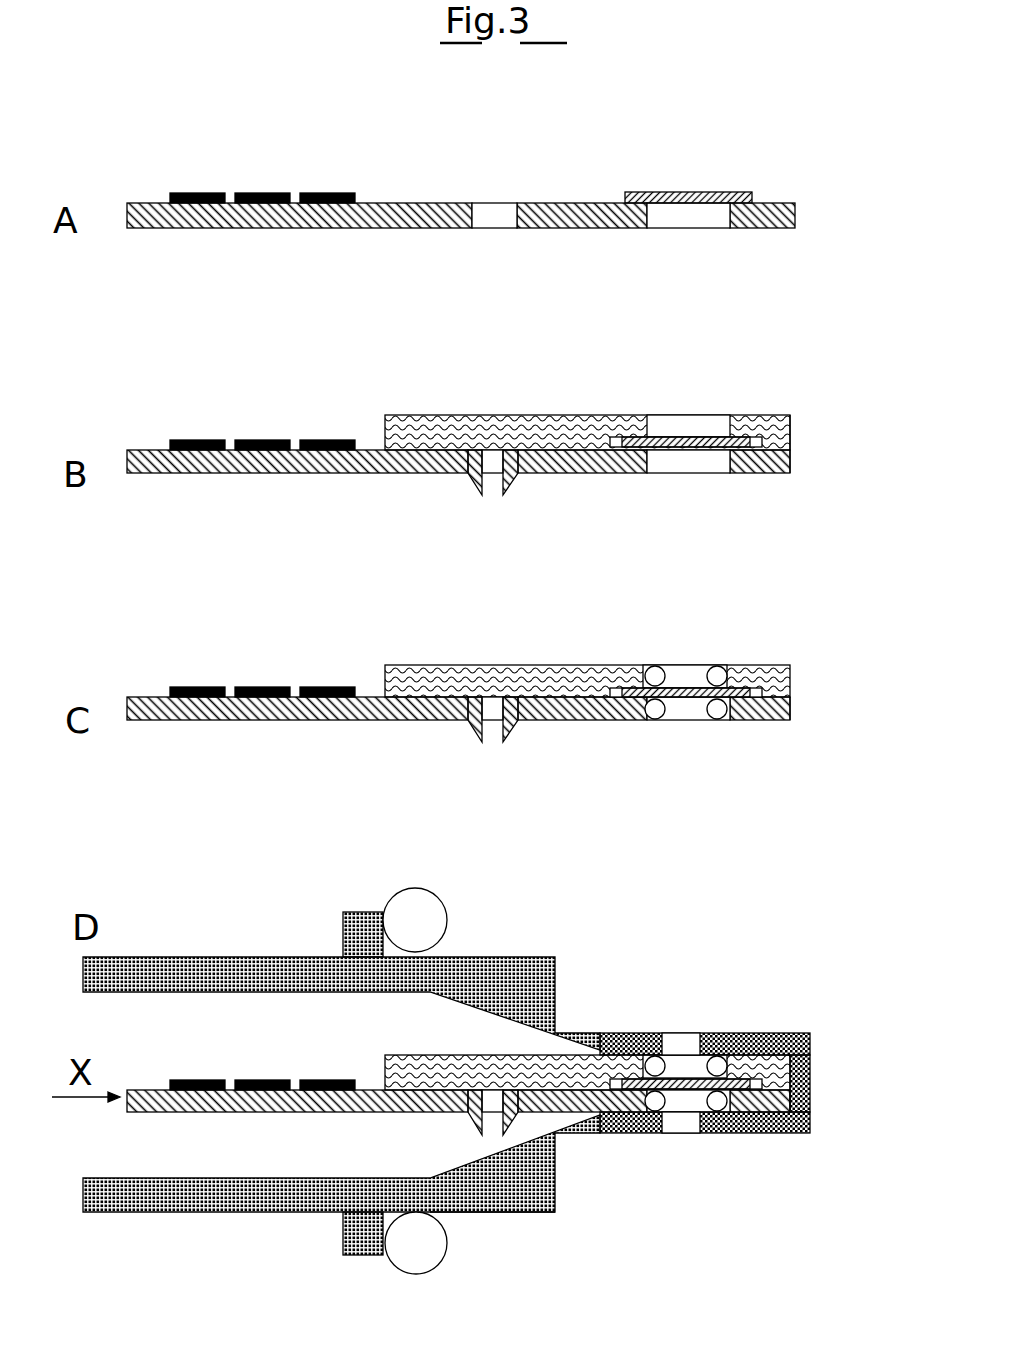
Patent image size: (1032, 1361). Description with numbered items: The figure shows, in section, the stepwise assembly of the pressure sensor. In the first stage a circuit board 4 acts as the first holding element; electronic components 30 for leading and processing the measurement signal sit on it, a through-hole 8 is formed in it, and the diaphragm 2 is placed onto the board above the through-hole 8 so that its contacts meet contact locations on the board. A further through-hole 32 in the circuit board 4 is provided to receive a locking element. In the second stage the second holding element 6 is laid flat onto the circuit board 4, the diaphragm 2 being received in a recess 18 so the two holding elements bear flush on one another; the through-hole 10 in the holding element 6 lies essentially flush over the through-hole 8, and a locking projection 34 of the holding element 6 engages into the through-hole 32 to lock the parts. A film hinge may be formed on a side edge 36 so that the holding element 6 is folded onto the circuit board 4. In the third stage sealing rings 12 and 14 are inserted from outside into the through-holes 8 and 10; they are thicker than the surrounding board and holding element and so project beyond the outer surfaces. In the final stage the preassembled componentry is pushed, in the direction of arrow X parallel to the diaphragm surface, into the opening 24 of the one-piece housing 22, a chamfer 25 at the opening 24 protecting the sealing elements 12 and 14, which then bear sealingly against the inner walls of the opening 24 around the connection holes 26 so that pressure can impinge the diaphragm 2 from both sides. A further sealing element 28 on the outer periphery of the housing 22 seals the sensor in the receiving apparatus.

The diaphragm 2 is at (675, 192).
The circuit board 4 is at (578, 203).
The holding element 6 is at (778, 415).
The through-hole 8 is at (705, 228).
The through-hole 10 is at (693, 415).
The sealing ring 12 is at (725, 720).
The sealing ring 14 is at (722, 665).
The recess 18 is at (800, 427).
The housing 22 is at (200, 957).
The opening 24 is at (455, 1030).
The chamfer 25 is at (540, 1213).
The connection holes 26 is at (700, 1033).
The sealing element 28 is at (390, 895).
The electronic components 30 is at (322, 193).
The through-hole 32 is at (497, 228).
The locking projection 34 is at (473, 487).
The side edge 36 is at (795, 470).